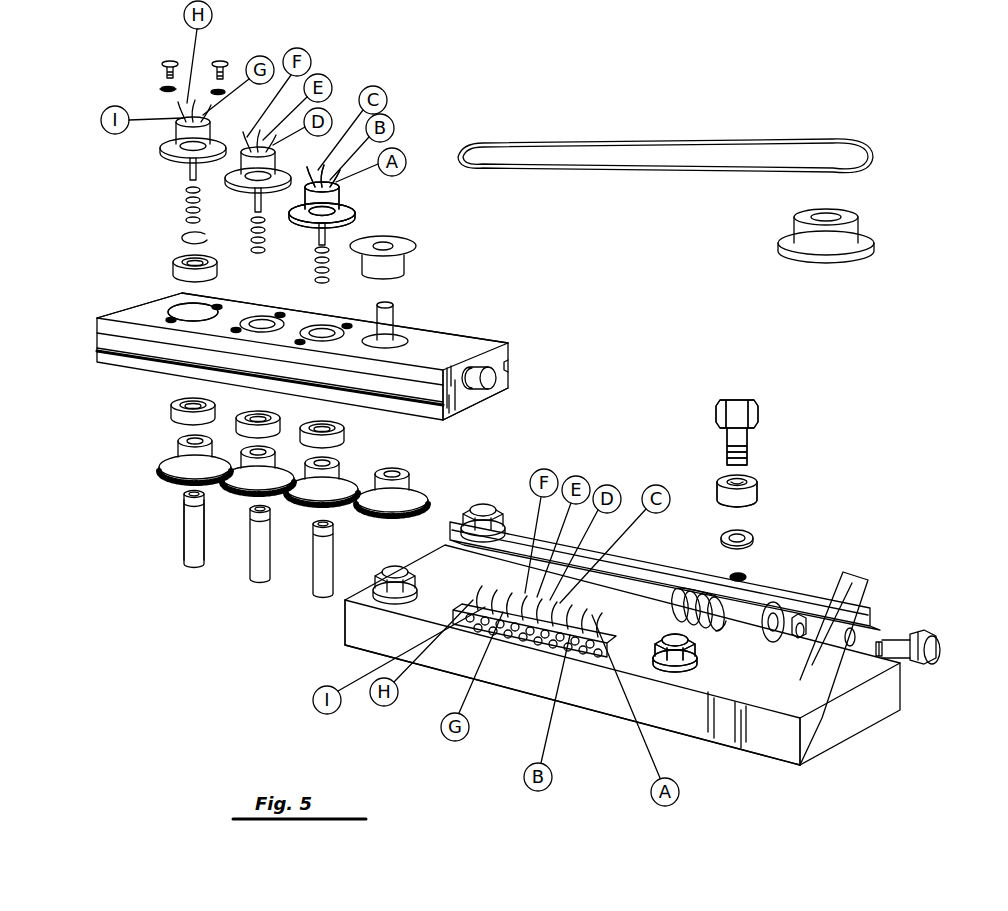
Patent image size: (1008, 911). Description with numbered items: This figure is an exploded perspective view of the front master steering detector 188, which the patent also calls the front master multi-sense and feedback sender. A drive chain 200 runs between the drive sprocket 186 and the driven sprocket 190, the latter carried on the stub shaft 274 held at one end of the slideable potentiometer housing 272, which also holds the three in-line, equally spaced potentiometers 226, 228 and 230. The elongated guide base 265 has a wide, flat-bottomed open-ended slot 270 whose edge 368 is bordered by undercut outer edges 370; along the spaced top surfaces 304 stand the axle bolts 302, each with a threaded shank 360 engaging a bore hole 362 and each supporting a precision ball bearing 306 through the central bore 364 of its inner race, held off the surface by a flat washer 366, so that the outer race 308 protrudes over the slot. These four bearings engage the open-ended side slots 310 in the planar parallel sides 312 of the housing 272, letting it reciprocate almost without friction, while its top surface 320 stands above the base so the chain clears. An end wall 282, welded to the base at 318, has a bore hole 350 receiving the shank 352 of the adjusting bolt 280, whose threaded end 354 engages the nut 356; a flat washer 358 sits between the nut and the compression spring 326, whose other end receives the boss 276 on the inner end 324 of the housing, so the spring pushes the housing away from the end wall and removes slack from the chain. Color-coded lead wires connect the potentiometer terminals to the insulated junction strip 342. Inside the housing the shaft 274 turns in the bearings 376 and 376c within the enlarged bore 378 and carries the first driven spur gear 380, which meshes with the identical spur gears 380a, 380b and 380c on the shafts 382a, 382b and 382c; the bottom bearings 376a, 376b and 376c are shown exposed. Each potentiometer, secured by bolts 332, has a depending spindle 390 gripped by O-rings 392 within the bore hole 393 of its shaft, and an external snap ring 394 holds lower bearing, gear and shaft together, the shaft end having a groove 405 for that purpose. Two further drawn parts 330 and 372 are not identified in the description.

The drive sprocket 186 is at (858, 218).
The front master steering detector 188 is at (800, 766).
The driven sprocket 190 is at (416, 247).
The drive chain 200 is at (640, 142).
The potentiometer 226 is at (343, 188).
The potentiometer 228 is at (313, 170).
The potentiometer 230 is at (160, 143).
The guide base 265 is at (716, 750).
The slot 270 is at (447, 585).
The potentiometer housing 272 is at (97, 318).
The stub shaft 274 is at (397, 322).
The boss 276 is at (494, 385).
The adjusting bolt 280 is at (917, 644).
The end wall 282 is at (832, 688).
The axle bolt 302 is at (760, 431).
The top surface 304 is at (343, 605).
The precision ball bearing 306 is at (750, 476).
The outer race 308 is at (758, 502).
The side slot 310 is at (97, 340).
The side 312 is at (417, 375).
The weld 318 is at (772, 709).
The top surface 320 is at (471, 348).
The inner end 324 is at (450, 403).
The compression spring 326 is at (670, 602).
The flange 330 is at (348, 216).
The bolt 332 is at (162, 64).
The electrical connection strip 342 is at (524, 623).
The bore hole 350 is at (852, 640).
The shank 352 is at (893, 640).
The threaded end 354 is at (883, 633).
The nut 356 is at (801, 617).
The flat washer 358 is at (777, 604).
The threaded shank 360 is at (728, 445).
The bore hole 362 is at (741, 575).
The central bore 364 is at (734, 480).
The flat washer 366 is at (162, 89).
The edge 368 is at (568, 592).
The outer edge 370 is at (471, 543).
The bushing 372 is at (267, 327).
The precision bearing 376 is at (176, 270).
The bottom precision bearing 376a is at (300, 445).
The bottom precision bearing 376b is at (236, 430).
The bottom precision bearing 376c is at (170, 410).
The enlarged bore 378 is at (213, 322).
The first driven spur gear 380 is at (440, 511).
The spur gear 380a is at (288, 488).
The spur gear 380b is at (222, 468).
The spur gear 380c is at (160, 460).
The shaft 382a is at (310, 593).
The shaft 382b is at (253, 577).
The shaft 382c is at (197, 560).
The spindle 390 is at (188, 163).
The O-ring 392 is at (186, 187).
The bore hole 393 is at (182, 500).
The external snap ring 394 is at (180, 236).
The groove 405 is at (200, 557).